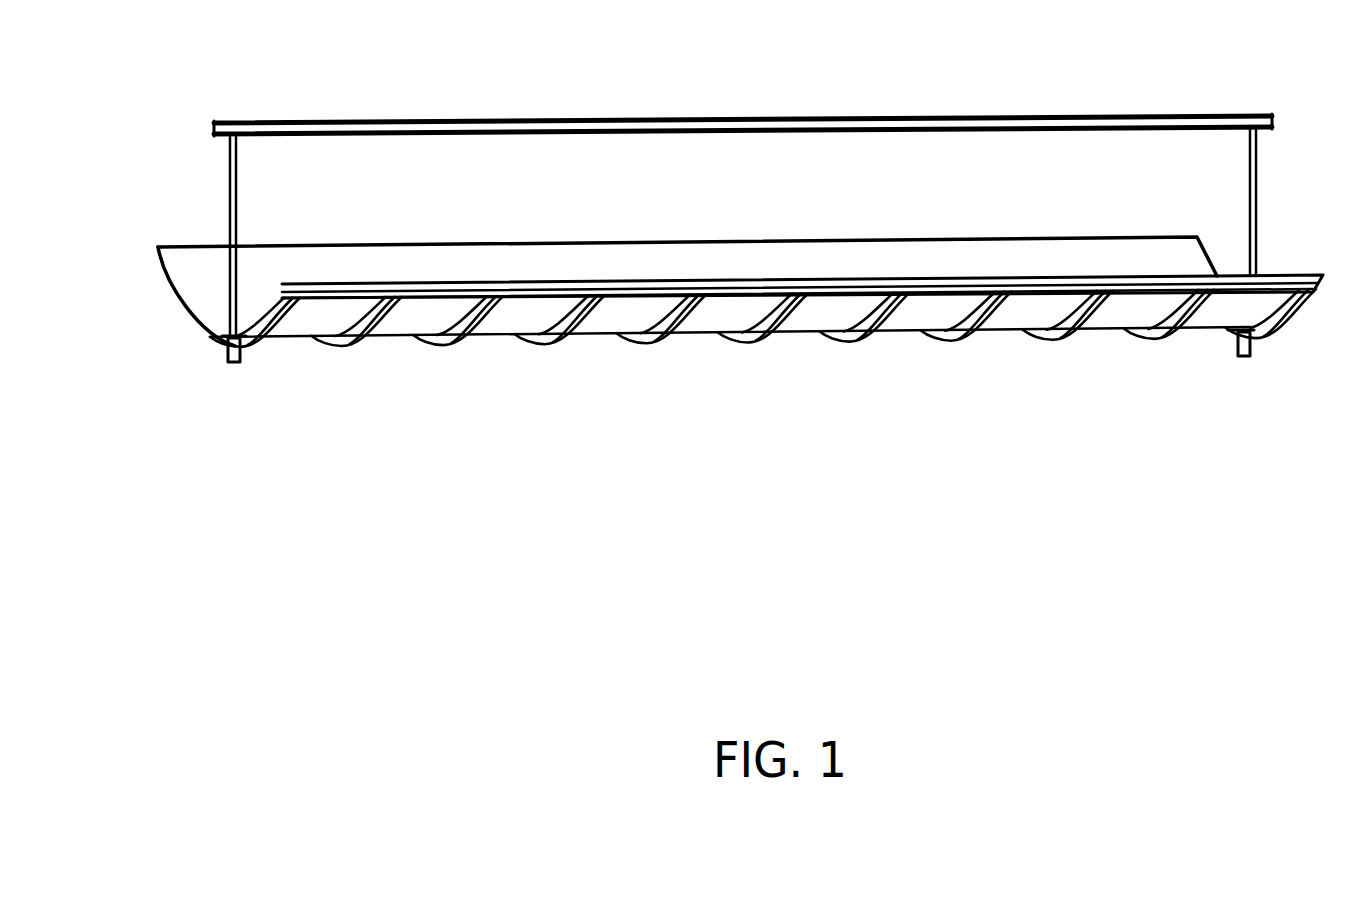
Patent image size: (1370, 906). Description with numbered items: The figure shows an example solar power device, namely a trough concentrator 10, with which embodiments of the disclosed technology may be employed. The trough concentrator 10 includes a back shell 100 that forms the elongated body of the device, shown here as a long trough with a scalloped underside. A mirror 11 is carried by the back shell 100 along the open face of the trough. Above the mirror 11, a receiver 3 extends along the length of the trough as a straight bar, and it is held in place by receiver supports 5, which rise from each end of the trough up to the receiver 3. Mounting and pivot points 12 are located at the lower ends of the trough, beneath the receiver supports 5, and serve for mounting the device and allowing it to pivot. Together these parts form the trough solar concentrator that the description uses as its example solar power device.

The receiver 3 is at (838, 117).
The receiver supports 5 is at (228, 210).
The trough concentrator 10 is at (185, 308).
The mirror 11 is at (648, 265).
The mounting and pivot points 12 is at (242, 363).
The back shell 100 is at (723, 244).